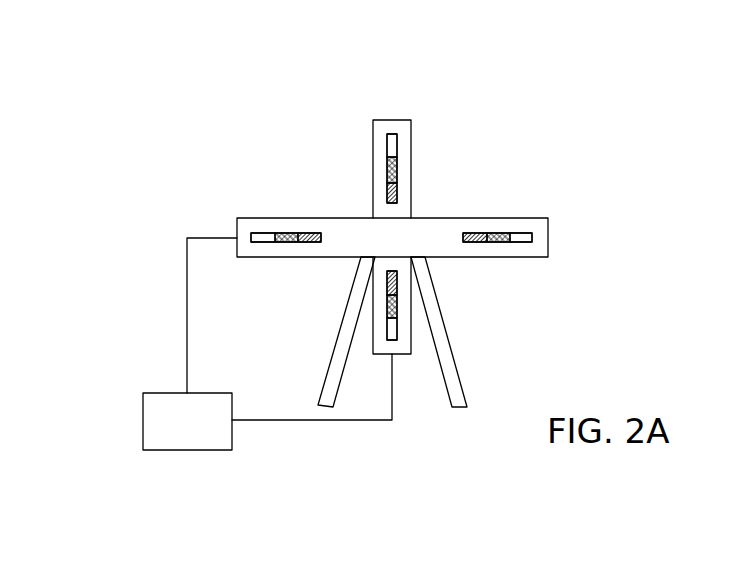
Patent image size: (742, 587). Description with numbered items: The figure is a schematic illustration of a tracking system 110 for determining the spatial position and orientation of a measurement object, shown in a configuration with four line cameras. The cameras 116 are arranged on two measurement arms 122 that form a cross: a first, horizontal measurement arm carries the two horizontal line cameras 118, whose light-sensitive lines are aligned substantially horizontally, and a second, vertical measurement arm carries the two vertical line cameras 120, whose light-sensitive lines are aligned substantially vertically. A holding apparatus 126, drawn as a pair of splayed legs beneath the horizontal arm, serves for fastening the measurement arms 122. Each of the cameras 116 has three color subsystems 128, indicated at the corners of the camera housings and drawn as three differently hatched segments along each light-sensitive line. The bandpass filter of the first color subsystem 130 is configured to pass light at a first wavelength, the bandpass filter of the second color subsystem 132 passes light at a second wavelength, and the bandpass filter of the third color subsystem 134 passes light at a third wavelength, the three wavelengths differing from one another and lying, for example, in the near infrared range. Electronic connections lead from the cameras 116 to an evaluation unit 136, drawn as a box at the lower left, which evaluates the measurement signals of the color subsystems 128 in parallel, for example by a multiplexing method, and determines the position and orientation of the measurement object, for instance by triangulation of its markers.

The tracking system 110 is at (507, 133).
The cameras 116 is at (390, 118).
The horizontal line cameras 118 is at (410, 186).
The vertical line cameras 120 is at (446, 233).
The measurement arms 122 is at (373, 182).
The holding apparatus 126 is at (455, 372).
The color subsystems 128 is at (371, 120).
The first color subsystem 130 is at (397, 140).
The second color subsystem 132 is at (397, 165).
The third color subsystem 134 is at (397, 190).
The evaluation unit 136 is at (205, 432).